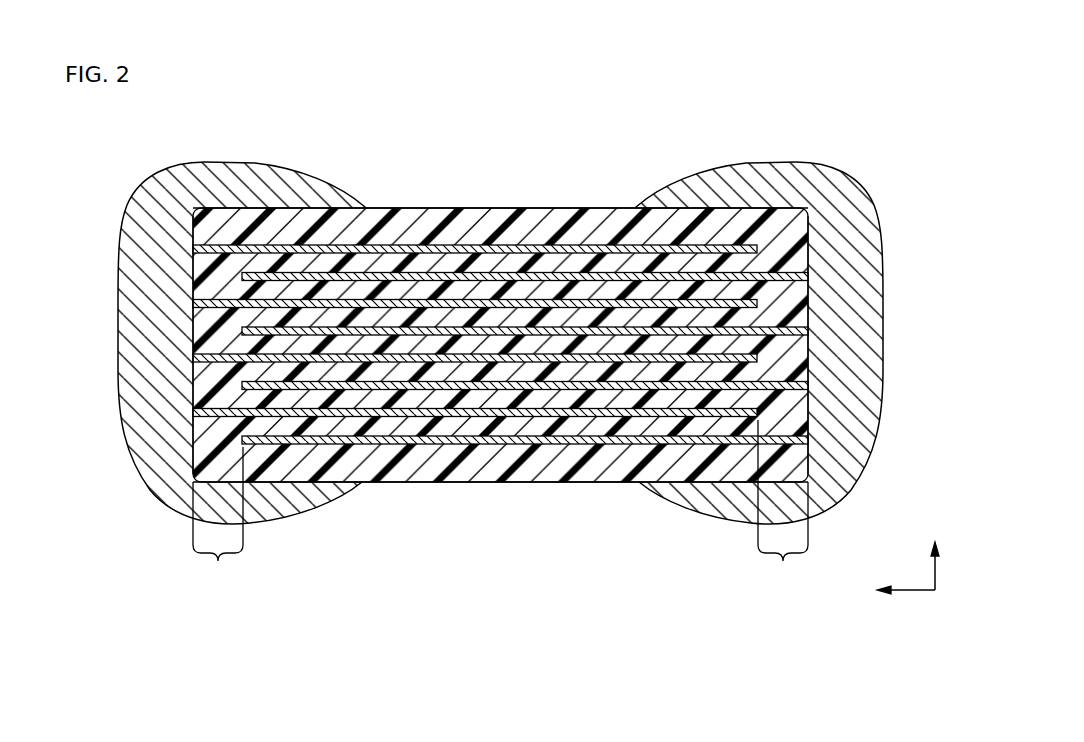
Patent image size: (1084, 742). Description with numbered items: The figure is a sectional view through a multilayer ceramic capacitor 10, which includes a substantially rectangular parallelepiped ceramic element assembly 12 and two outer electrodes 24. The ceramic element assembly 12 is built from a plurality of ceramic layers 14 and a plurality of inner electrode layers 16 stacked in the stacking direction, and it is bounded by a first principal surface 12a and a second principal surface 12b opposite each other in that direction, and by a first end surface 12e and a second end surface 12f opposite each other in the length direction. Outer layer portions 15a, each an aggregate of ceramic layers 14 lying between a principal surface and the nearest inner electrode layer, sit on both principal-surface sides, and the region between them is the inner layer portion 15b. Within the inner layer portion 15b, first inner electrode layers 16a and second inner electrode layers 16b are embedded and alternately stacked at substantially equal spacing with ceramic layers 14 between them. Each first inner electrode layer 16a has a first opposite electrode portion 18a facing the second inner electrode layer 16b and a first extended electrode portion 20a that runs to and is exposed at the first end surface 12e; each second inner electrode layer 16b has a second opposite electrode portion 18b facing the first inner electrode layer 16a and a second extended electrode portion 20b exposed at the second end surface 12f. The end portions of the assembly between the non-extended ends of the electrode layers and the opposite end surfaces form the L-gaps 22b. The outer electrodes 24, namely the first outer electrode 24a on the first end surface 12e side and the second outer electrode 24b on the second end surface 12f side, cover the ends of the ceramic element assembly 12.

The multilayer ceramic capacitor 10 is at (142, 167).
The ceramic element assembly 12 is at (624, 212).
The first principal surface 12a is at (598, 207).
The second principal surface 12b is at (463, 483).
The first end surface 12e is at (193, 328).
The second end surface 12f is at (808, 343).
The ceramic layers 14 is at (413, 135).
The outer layer portions 15a is at (322, 235).
The inner layer portion 15b is at (392, 318).
The inner electrode layers 16 is at (167, 627).
The first inner electrode layers 16a is at (562, 304).
The second inner electrode layers 16b is at (520, 331).
The first opposite electrode portion 18a is at (485, 304).
The second opposite electrode portion 18b is at (438, 330).
The first extended electrode portion 20a is at (204, 250).
The second extended electrode portion 20b is at (797, 278).
The L-gaps 22b is at (500, 510).
The outer electrodes 24 is at (320, 627).
The first outer electrode 24a is at (242, 182).
The second outer electrode 24b is at (767, 176).